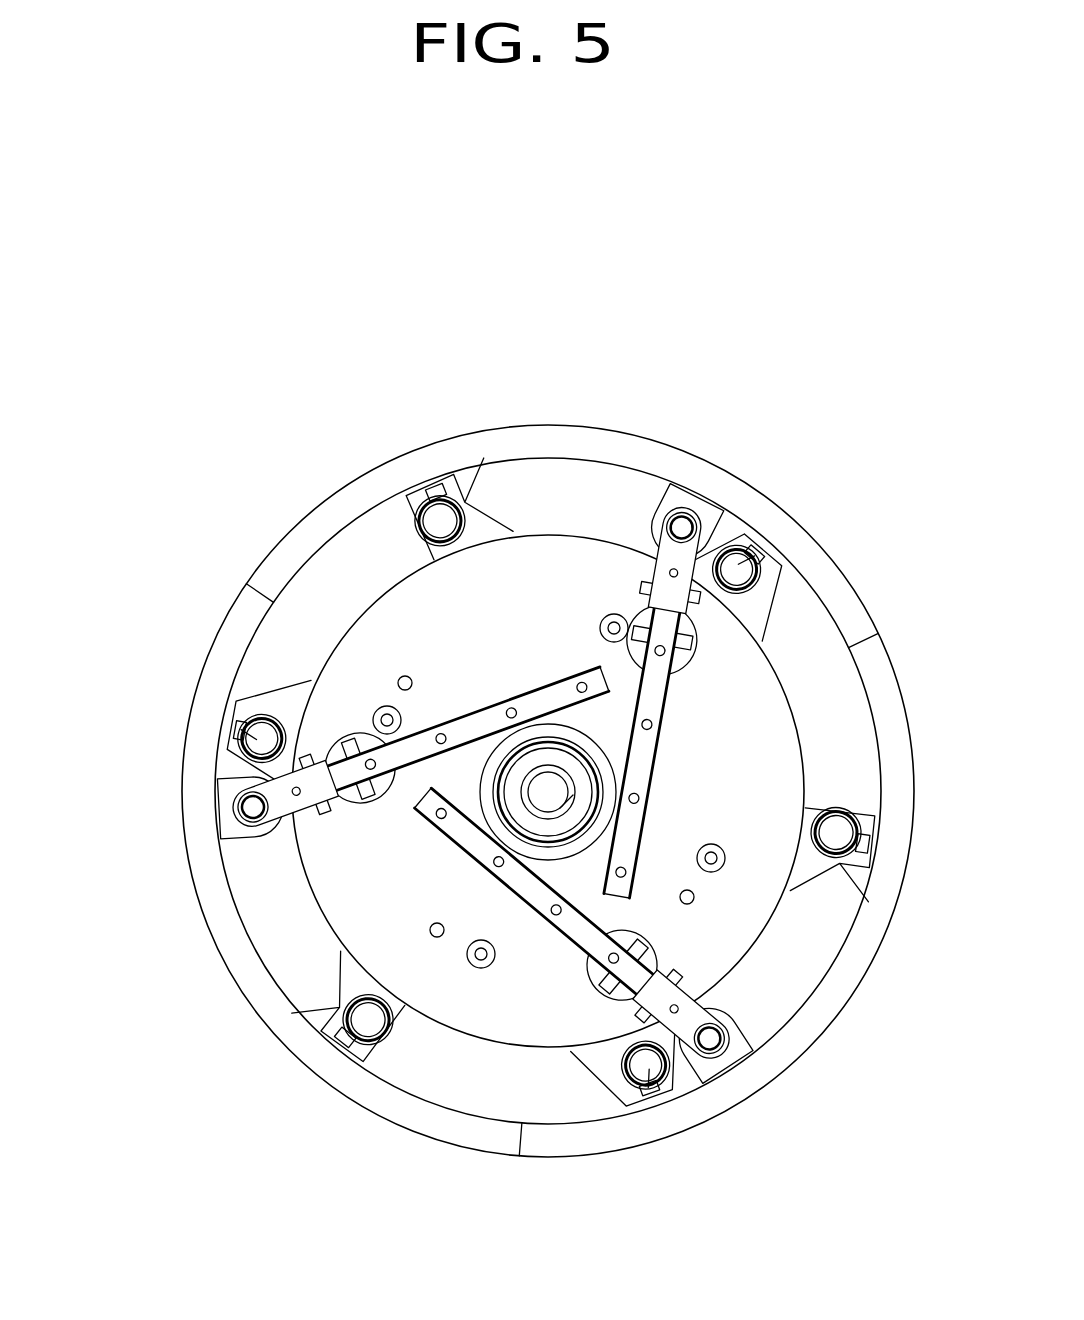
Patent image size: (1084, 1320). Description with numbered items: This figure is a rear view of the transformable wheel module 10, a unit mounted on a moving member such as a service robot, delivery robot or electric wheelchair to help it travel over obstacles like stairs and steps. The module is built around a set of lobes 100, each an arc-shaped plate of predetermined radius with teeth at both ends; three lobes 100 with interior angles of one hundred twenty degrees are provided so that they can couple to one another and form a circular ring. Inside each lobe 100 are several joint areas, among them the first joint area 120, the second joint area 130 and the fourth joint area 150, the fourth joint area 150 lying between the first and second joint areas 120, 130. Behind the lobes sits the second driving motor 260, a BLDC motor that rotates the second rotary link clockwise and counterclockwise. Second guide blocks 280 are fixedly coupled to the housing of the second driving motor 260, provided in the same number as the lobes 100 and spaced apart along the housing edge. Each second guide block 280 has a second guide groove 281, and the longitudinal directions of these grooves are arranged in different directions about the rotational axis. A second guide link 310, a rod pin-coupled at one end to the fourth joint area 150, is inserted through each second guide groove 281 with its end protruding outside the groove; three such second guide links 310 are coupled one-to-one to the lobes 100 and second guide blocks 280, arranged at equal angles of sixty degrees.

The transformable wheel module 10 is at (710, 398).
The lobe 100 is at (348, 1104).
The first joint area 120 is at (358, 1017).
The second joint area 130 is at (236, 737).
The fourth joint area 150 is at (238, 807).
The second driving motor 260 is at (300, 897).
The second guide block 280 is at (622, 1012).
The second guide groove 281 is at (660, 952).
The second guide link 310 is at (515, 889).